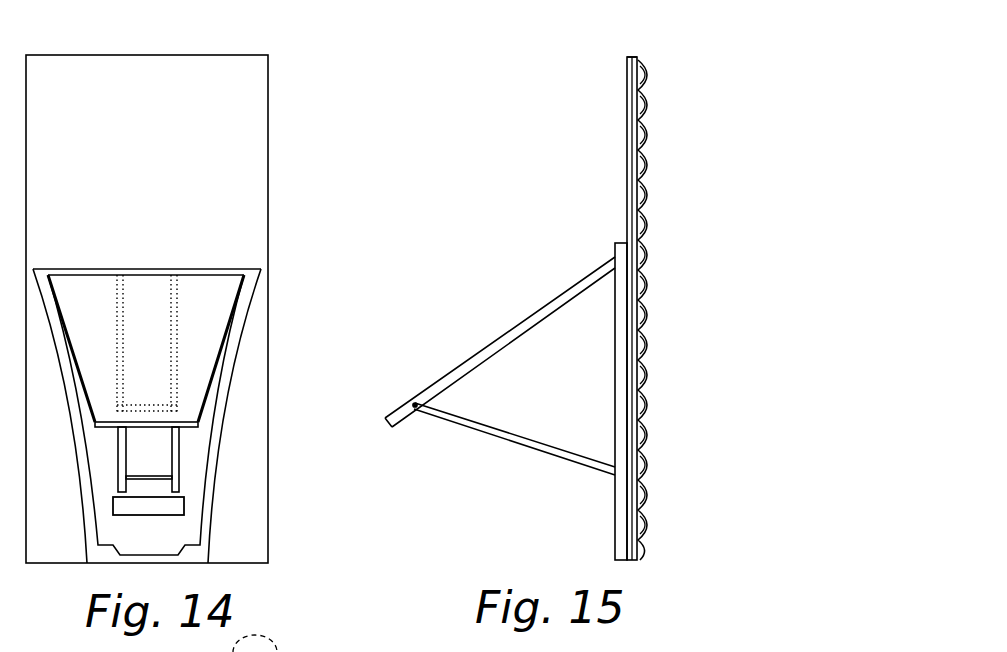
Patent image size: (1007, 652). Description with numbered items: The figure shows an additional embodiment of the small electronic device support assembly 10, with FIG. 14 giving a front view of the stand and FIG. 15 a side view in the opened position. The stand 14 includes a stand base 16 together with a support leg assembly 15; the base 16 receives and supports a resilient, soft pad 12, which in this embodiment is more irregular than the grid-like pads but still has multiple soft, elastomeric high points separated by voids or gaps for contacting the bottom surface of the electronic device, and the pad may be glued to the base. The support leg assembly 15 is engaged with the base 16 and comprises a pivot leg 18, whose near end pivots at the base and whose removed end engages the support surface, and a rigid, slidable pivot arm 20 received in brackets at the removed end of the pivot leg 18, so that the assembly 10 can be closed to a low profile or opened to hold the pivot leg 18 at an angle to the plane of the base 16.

In FIG. 15, the small electronic device support assembly 10 is at (587, 283).
In FIG. 15, the pad 12 is at (653, 193).
In FIG. 15, the stand 14 is at (589, 207).
In FIG. 14, the support leg assembly 15 is at (250, 360).
In FIG. 15, the support leg assembly 15 is at (506, 401).
In FIG. 15, the stand base 16 is at (627, 57).
In FIG. 15, the pivot leg 18 is at (500, 348).
In FIG. 15, the pivot arm 20 is at (515, 438).